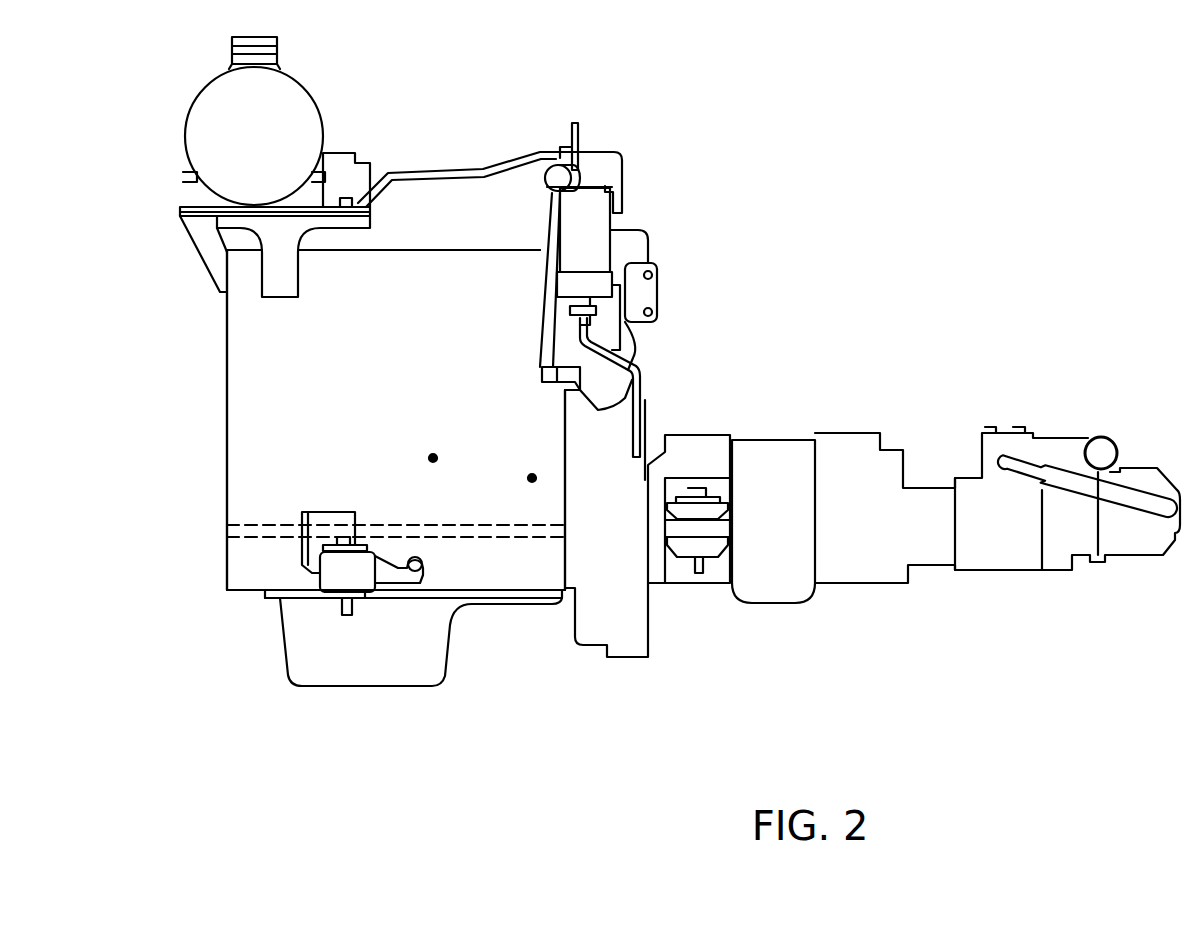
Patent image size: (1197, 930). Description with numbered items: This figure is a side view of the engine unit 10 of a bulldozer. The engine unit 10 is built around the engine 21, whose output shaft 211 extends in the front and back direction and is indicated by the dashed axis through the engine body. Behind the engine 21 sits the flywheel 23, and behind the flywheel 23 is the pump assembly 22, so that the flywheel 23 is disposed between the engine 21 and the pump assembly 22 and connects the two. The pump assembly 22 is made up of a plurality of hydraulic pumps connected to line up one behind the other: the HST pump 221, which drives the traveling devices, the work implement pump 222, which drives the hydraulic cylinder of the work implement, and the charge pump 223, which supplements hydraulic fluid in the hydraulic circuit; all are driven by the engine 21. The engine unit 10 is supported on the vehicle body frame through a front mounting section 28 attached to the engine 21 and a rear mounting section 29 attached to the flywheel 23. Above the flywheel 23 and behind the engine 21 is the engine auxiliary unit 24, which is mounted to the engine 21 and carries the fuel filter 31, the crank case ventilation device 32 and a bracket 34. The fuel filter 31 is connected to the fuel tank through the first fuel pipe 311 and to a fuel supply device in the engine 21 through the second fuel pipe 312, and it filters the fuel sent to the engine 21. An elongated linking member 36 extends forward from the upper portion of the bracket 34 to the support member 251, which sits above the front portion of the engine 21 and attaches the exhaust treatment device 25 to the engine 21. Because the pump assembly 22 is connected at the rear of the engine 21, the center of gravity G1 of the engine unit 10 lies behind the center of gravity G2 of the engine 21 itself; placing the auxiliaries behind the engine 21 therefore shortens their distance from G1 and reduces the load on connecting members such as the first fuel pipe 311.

The engine unit 10 is at (808, 115).
The engine 21 is at (440, 153).
The output shaft 211 is at (500, 540).
The pump assembly 22 is at (838, 365).
The HST pump 221 is at (778, 572).
The work implement pump 222 is at (1005, 550).
The charge pump 223 is at (1132, 545).
The flywheel 23 is at (607, 625).
The engine auxiliary unit 24 is at (645, 224).
The exhaust treatment device 25 is at (297, 105).
The support member 251 is at (342, 162).
The front mounting section 28 is at (342, 570).
The rear mounting section 29 is at (693, 527).
The fuel filter 31 is at (587, 205).
The first fuel pipe 311 is at (632, 205).
The second fuel pipe 312 is at (550, 335).
The crank case ventilation device 32 is at (637, 245).
The bracket 34 is at (577, 148).
The linking member 36 is at (500, 160).
The center of gravity of the engine unit G1 is at (532, 482).
The center of gravity of the engine G2 is at (433, 462).